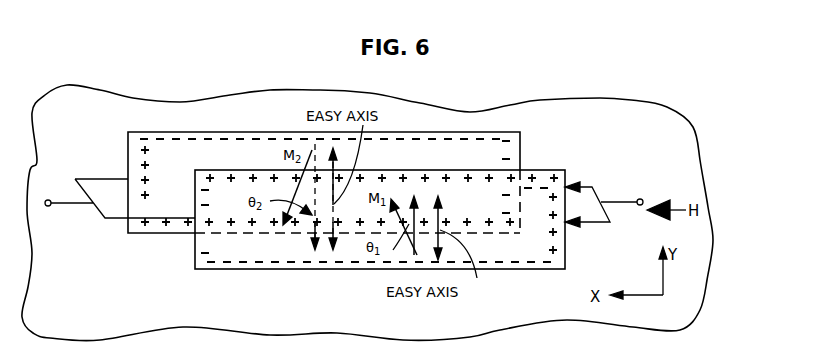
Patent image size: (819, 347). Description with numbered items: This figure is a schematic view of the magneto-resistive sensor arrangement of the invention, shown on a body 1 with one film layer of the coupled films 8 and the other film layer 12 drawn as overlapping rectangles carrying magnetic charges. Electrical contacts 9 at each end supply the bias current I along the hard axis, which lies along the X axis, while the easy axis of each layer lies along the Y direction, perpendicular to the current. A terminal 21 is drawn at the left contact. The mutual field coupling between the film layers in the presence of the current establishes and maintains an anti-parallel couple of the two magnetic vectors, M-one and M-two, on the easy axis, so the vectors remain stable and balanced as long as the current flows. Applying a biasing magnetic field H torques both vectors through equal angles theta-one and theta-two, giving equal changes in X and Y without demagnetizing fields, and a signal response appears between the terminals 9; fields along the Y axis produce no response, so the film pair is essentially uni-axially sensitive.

The substrate / sensor body 1 is at (630, 109).
The coupled films 8 is at (517, 151).
The second magnetic layer 12 is at (541, 170).
The electrical contacts 9 is at (80, 204).
The terminal 21 is at (52, 190).